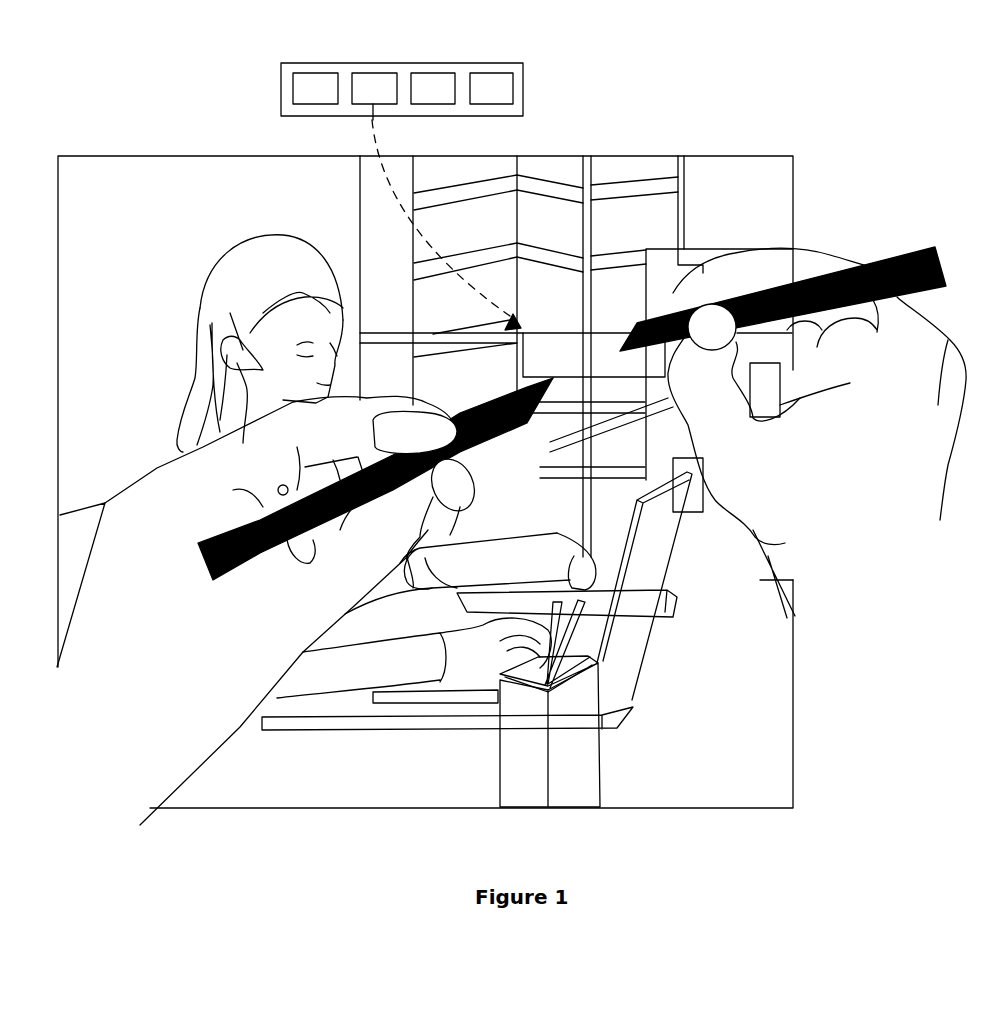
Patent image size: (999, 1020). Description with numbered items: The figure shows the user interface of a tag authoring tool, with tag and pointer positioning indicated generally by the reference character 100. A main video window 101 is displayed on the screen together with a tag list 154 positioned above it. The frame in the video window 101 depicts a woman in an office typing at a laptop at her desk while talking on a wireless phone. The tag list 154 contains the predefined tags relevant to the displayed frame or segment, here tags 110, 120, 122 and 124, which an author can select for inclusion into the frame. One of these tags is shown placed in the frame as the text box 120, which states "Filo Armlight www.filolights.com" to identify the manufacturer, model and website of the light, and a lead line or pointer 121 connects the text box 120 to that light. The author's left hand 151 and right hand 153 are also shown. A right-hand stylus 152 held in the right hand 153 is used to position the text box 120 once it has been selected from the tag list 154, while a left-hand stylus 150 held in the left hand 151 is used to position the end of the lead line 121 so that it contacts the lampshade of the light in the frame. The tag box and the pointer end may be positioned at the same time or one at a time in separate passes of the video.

The tag and pointer positioning 100 is at (898, 113).
The main video window 101 is at (663, 156).
The tag 110 is at (301, 98).
The text box 120 is at (360, 98).
The lead line 121 is at (537, 383).
The tag 122 is at (419, 98).
The tag 124 is at (477, 98).
The left-hand stylus 150 is at (243, 563).
The left hand 151 is at (177, 659).
The right-hand stylus 152 is at (783, 301).
The right hand 153 is at (876, 473).
The tag list 154 is at (525, 84).